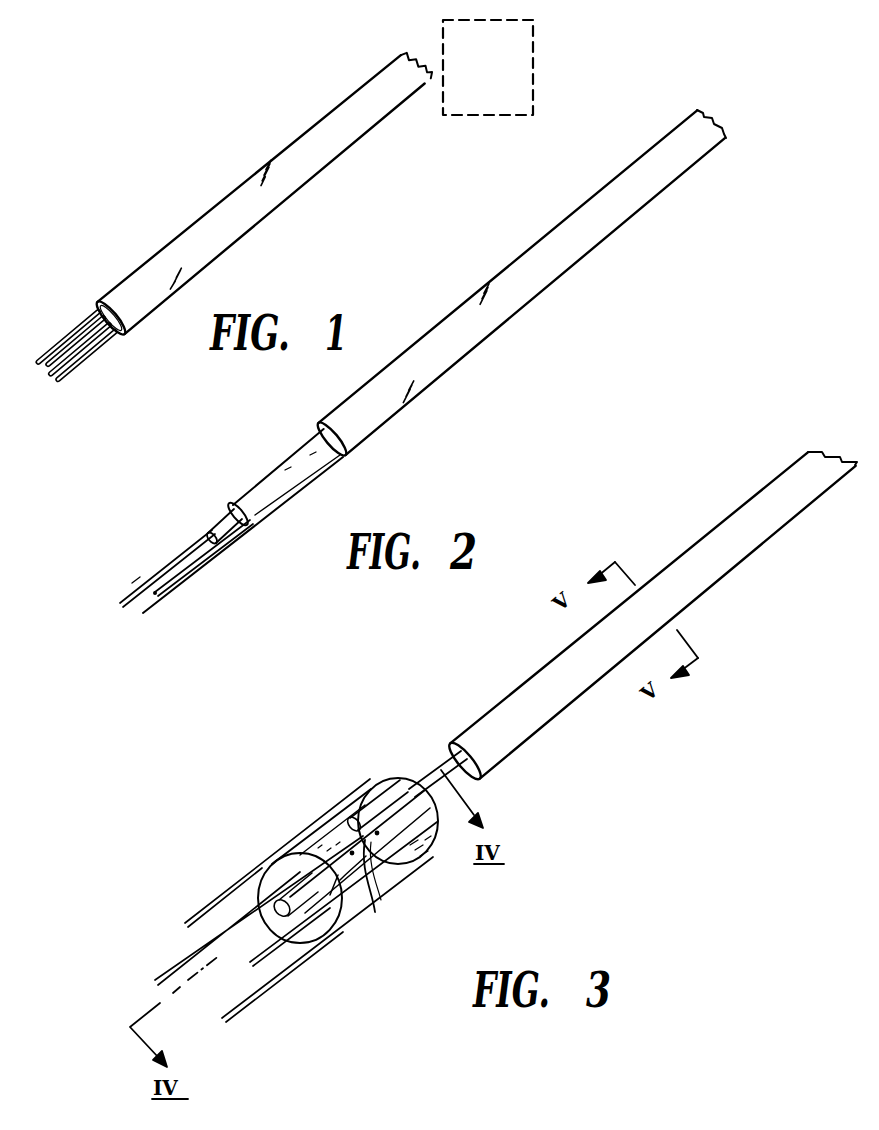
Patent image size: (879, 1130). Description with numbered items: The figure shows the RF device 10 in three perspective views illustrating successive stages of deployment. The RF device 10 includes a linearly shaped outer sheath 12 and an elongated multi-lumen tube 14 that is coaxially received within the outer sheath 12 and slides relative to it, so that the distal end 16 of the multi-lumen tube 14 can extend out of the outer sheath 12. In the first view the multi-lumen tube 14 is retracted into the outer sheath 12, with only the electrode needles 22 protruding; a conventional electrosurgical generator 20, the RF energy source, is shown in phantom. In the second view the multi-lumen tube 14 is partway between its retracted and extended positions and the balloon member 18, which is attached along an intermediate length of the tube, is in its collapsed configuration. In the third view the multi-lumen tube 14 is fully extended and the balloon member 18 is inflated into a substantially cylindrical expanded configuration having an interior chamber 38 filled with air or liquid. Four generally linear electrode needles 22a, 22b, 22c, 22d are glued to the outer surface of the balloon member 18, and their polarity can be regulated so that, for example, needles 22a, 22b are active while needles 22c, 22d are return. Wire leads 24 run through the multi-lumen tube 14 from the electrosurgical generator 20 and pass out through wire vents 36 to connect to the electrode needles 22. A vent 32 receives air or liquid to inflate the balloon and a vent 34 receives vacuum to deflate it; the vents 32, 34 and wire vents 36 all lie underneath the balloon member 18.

In FIG. 1, the RF device 10 is at (152, 195).
In FIG. 2, the RF device 10 is at (514, 351).
In FIG. 3, the RF device 10 is at (600, 752).
In FIG. 1, the outer sheath 12 is at (220, 197).
In FIG. 2, the outer sheath 12 is at (543, 240).
In FIG. 3, the outer sheath 12 is at (740, 520).
In FIG. 3, the multi-lumen tube 14 is at (448, 768).
In FIG. 2, the distal end 16 is at (217, 521).
In FIG. 3, the distal end 16 is at (300, 943).
In FIG. 2, the balloon member 18 is at (272, 482).
In FIG. 3, the balloon member 18 is at (316, 830).
In FIG. 1, the electrosurgical generator 20 is at (536, 63).
In FIG. 1, the electrode needles 22 is at (68, 328).
In FIG. 2, the electrode needles 22 is at (157, 567).
In FIG. 3, the electrode needle 22a is at (218, 900).
In FIG. 3, the electrode needle 22b is at (172, 960).
In FIG. 3, the electrode needle 22c is at (237, 1013).
In FIG. 3, the electrode needle 22d is at (253, 958).
In FIG. 3, the wire leads 24 is at (347, 828).
In FIG. 3, the vent 32 is at (377, 833).
In FIG. 3, the vent 34 is at (352, 853).
In FIG. 3, the wire vents 36 is at (375, 906).
In FIG. 3, the interior chamber 38 is at (428, 857).